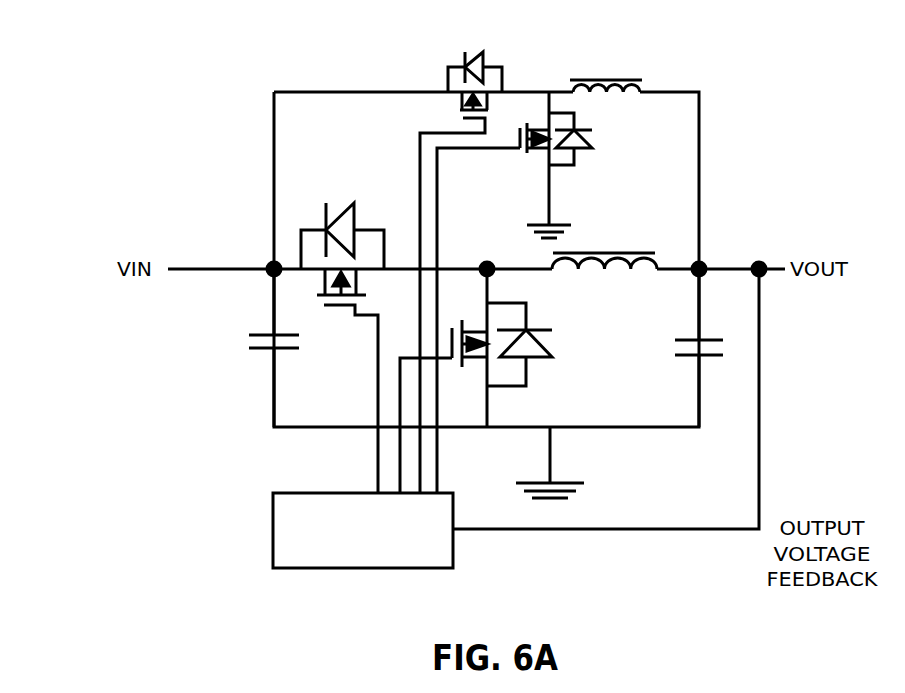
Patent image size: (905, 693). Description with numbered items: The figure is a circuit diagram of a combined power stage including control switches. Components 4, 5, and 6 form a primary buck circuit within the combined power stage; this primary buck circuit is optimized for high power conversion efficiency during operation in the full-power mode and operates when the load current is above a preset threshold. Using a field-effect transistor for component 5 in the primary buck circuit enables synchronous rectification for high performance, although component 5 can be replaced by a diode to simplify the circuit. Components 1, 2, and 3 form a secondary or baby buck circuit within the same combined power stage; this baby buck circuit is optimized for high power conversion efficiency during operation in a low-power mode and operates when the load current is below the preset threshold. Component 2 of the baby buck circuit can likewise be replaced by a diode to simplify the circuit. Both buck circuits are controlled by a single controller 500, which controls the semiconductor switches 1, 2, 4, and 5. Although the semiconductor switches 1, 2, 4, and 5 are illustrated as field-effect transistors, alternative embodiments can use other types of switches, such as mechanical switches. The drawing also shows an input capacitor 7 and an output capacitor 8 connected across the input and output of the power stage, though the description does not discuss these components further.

The semiconductor switch 1 is at (461, 258).
The semiconductor switch 2 is at (520, 303).
The inductor of the baby buck circuit 3 is at (606, 72).
The semiconductor switch 4 is at (343, 348).
The semiconductor switch 5 is at (483, 398).
The inductor of the primary buck circuit 6 is at (604, 248).
The input capacitor 7 is at (265, 348).
The output capacitor 8 is at (688, 348).
The controller 500 is at (516, 418).